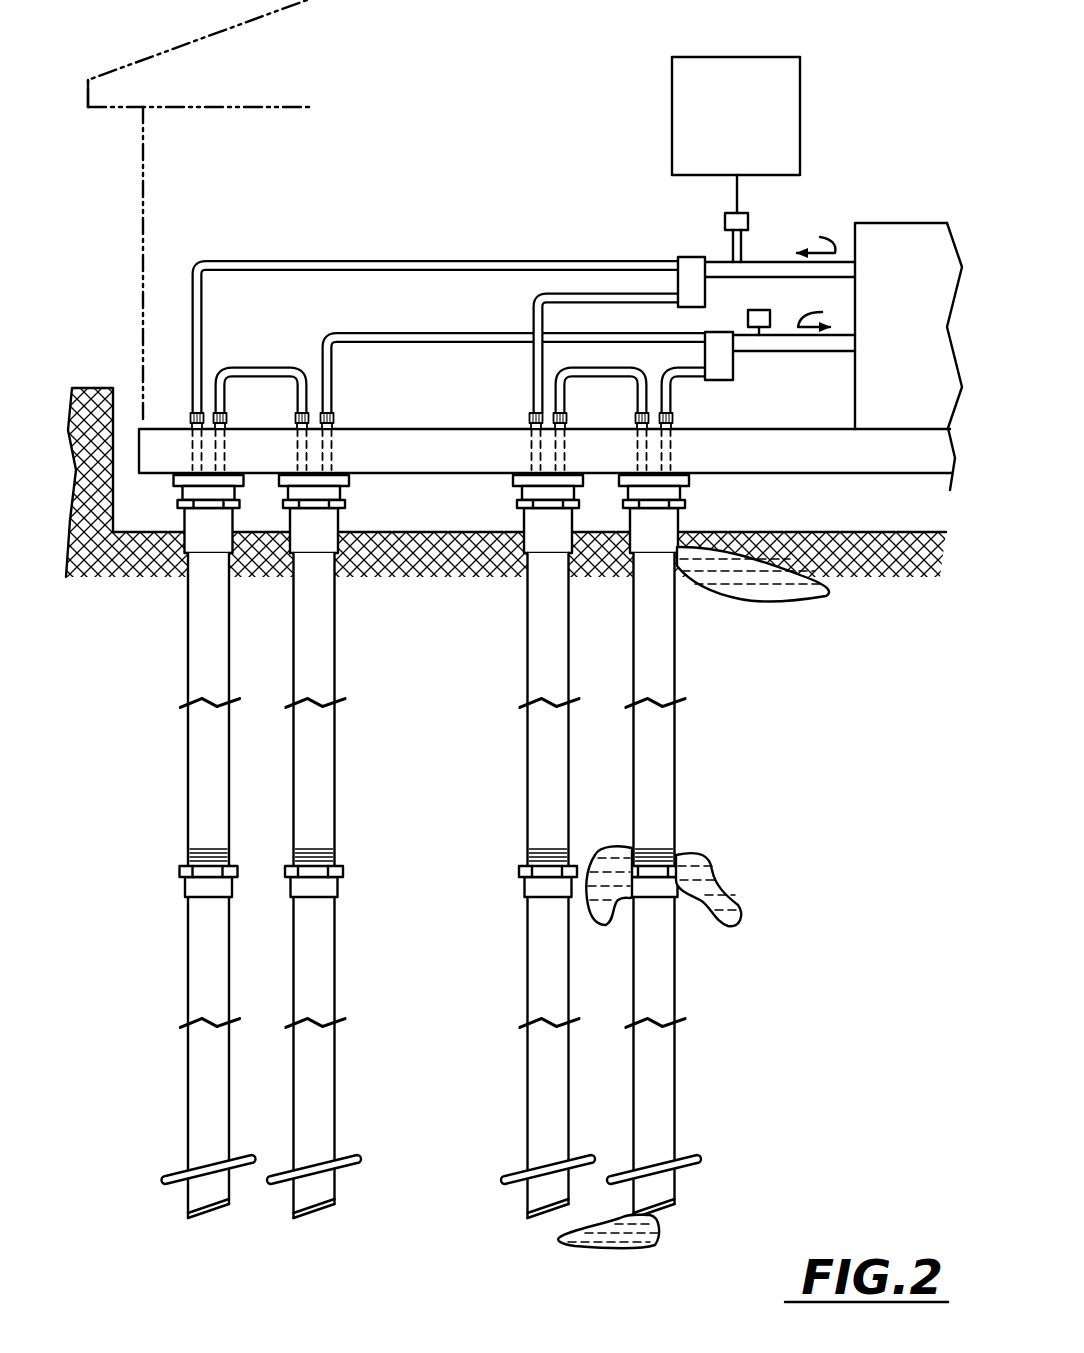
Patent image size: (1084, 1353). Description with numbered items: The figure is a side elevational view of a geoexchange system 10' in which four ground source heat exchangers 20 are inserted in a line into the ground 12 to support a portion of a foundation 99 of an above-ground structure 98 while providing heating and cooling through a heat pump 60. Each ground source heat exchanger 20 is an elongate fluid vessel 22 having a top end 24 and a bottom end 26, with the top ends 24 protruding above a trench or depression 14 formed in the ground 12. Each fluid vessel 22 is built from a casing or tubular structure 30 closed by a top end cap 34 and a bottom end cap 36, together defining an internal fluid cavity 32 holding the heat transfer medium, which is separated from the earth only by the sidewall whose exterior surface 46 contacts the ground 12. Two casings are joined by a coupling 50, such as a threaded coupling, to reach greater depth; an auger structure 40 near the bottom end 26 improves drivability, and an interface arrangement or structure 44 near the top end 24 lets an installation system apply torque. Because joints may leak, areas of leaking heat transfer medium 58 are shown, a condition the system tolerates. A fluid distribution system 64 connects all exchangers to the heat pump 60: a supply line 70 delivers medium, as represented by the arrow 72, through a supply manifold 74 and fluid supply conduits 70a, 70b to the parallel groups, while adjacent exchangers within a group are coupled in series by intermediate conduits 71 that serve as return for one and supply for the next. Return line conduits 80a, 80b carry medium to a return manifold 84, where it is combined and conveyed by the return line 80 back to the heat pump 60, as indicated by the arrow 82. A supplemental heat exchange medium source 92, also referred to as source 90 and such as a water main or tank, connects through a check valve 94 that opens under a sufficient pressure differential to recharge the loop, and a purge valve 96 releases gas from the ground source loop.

The geoexchange system 10' is at (178, 95).
The ground 12 is at (98, 388).
The trench or depression 14 is at (150, 533).
The ground source heat exchanger 20 is at (433, 859).
The fluid vessel 22 is at (190, 796).
The top end 24 is at (428, 529).
The bottom end 26 is at (433, 1172).
The casing or tubular structure 30 is at (429, 885).
The internal fluid cavity 32 is at (200, 672).
The top end cap 34 is at (174, 482).
The bottom end cap 36 is at (207, 1215).
The auger structure 40 is at (166, 1178).
The interface arrangement or structure 44 is at (240, 505).
The exterior surface 46 is at (197, 835).
The coupling 50 is at (406, 853).
The areas of leaking heat transfer medium 58 is at (752, 596).
The heat pump 60 is at (892, 223).
The fluid distribution system 64 is at (502, 326).
The supply line 70 is at (414, 318).
The fluid supply conduit 70a is at (287, 262).
The fluid supply conduit 70b is at (540, 294).
The intermediate conduit 71 is at (280, 378).
The arrow representing supply flow 72 is at (812, 237).
The supply manifold 74 is at (691, 257).
The return line 80 is at (778, 412).
The return line conduit 80a is at (350, 333).
The return line conduit 80b is at (688, 380).
The arrow representing return flow 82 is at (819, 311).
The return manifold 84 is at (736, 379).
The supplemental heat exchange medium source 90 is at (742, 192).
The supplemental heat exchange medium source 92 is at (802, 72).
The check valve 94 is at (749, 220).
The purge valve 96 is at (754, 310).
The structure 98 is at (143, 284).
The foundation 99 is at (449, 428).